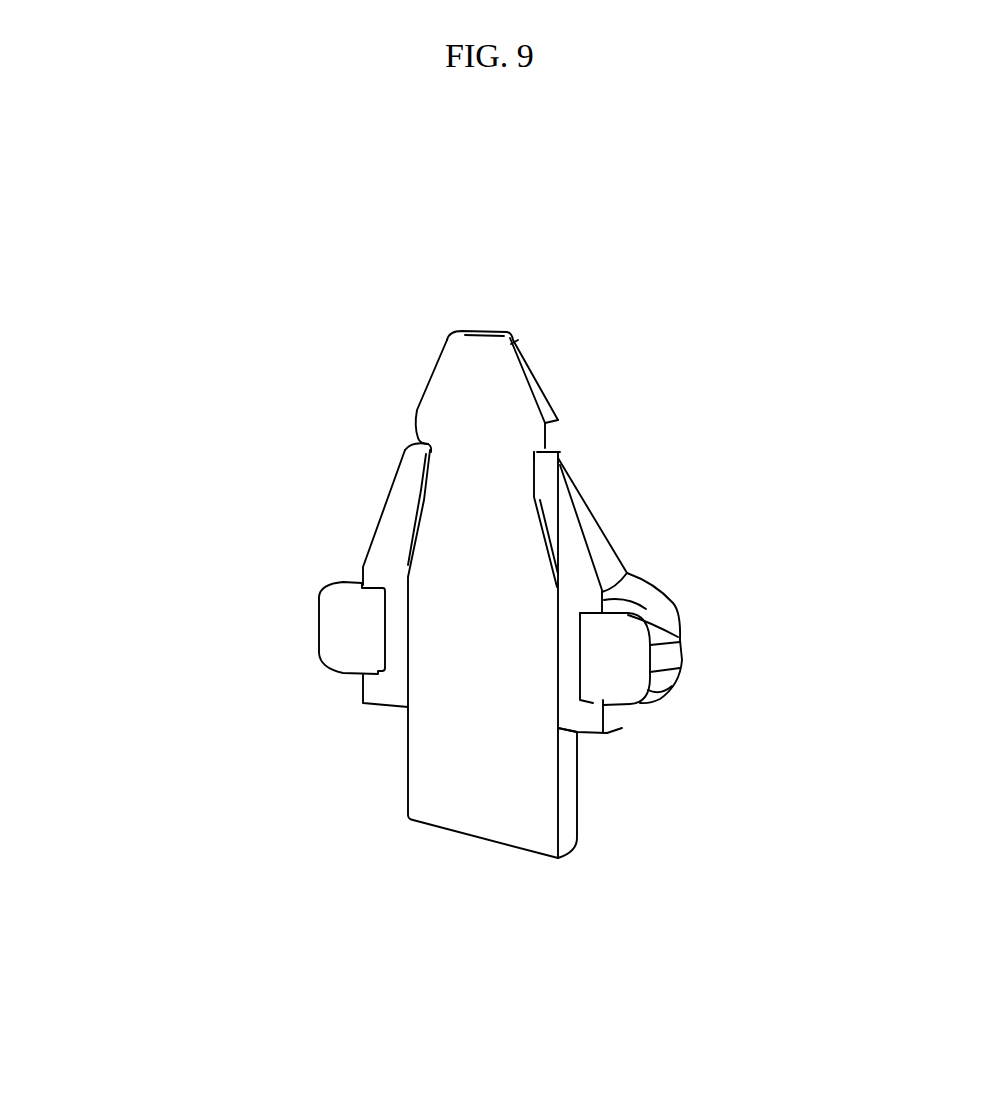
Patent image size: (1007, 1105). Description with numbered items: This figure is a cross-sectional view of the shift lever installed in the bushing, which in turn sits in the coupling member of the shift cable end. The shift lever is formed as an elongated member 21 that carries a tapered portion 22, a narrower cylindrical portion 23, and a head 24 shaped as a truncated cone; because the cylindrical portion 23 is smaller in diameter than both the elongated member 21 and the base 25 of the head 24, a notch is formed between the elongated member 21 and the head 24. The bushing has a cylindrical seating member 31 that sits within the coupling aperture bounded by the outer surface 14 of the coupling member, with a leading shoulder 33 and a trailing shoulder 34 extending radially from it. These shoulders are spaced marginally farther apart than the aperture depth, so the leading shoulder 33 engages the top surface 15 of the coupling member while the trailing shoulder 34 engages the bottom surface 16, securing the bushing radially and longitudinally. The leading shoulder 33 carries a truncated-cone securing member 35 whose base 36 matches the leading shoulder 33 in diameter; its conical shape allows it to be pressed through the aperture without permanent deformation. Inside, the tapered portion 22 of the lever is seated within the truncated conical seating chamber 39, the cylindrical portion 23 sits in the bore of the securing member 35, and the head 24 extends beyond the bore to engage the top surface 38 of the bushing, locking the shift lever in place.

The outer surface 14 is at (682, 658).
The top surface 15 is at (640, 605).
The bottom surface 16 is at (620, 705).
The elongated member 21 is at (492, 792).
The tapered portion 22 is at (417, 508).
The cylindrical portion 23 is at (433, 467).
The head 24 is at (533, 373).
The base 25 is at (420, 437).
The seating member 31 is at (398, 639).
The leading shoulder 33 is at (382, 575).
The trailing shoulder 34 is at (382, 692).
The securing member 35 is at (585, 518).
The base 36 is at (618, 608).
The top surface 38 is at (545, 456).
The seating chamber 39 is at (415, 525).